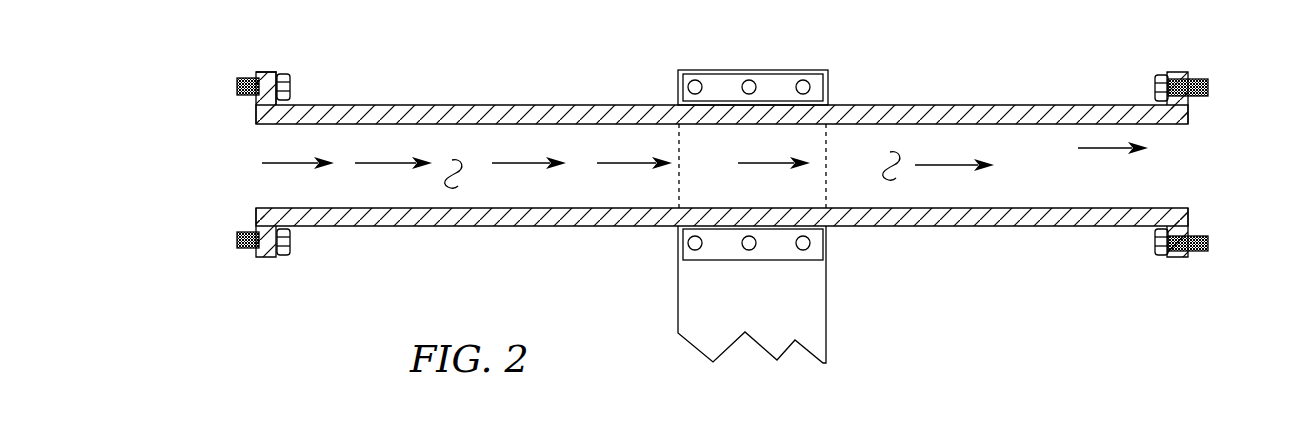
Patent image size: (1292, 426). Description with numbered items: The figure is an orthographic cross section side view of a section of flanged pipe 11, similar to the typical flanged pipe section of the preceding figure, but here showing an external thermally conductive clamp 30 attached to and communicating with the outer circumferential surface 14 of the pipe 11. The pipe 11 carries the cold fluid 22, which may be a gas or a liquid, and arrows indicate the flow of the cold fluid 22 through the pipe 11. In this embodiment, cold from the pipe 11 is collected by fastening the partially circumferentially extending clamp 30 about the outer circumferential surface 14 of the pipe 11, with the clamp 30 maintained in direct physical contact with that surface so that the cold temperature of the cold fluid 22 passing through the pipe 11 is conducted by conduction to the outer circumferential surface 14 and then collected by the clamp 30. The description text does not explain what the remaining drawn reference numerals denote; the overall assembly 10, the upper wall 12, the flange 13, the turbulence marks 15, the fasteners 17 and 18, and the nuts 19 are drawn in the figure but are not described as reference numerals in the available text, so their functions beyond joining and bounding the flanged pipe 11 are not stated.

The flow conduit assembly 10 is at (299, 5).
The pipe 11 is at (952, 232).
The upper plate 12 is at (1167, 125).
The flange 13 is at (296, 105).
The outer circumferential surface 14 is at (603, 227).
The turbulence 15 is at (455, 186).
The bolt 17 is at (1178, 228).
The bolt 18 is at (262, 72).
The nut 19 is at (291, 82).
The cold fluid 22 is at (392, 163).
The clamp 30 is at (826, 268).